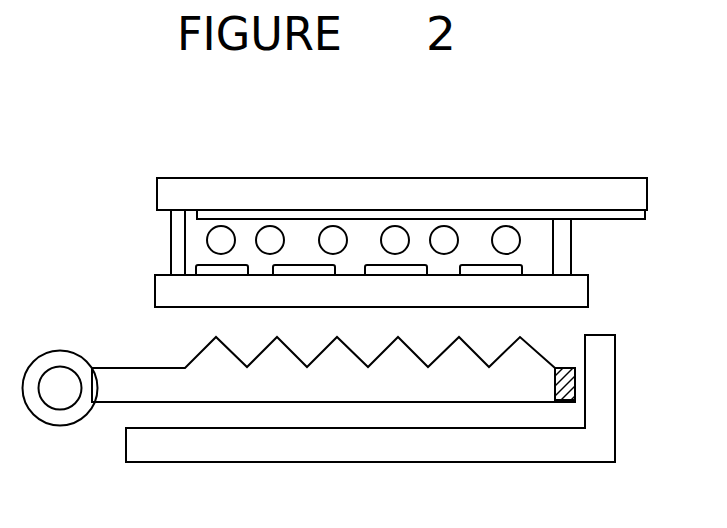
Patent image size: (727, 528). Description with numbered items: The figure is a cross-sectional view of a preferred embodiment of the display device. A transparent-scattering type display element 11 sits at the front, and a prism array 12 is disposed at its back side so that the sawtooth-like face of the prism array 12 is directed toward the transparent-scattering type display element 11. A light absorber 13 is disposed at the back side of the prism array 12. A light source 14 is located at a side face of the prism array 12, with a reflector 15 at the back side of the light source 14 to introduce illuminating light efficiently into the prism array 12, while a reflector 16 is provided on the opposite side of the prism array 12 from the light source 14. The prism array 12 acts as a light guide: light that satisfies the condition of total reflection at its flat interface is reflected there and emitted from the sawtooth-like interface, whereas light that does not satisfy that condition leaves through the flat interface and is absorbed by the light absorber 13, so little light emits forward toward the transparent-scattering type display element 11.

The transparent-scattering type display element 11 is at (537, 253).
The prism array 12 is at (397, 383).
The light absorber 13 is at (517, 443).
The light source 14 is at (62, 397).
The reflector 15 is at (62, 351).
The reflector 16 is at (572, 383).